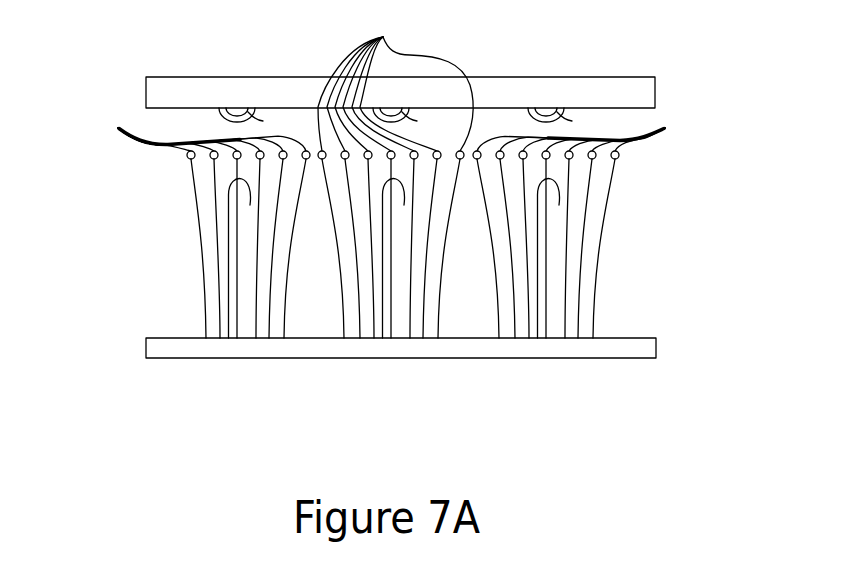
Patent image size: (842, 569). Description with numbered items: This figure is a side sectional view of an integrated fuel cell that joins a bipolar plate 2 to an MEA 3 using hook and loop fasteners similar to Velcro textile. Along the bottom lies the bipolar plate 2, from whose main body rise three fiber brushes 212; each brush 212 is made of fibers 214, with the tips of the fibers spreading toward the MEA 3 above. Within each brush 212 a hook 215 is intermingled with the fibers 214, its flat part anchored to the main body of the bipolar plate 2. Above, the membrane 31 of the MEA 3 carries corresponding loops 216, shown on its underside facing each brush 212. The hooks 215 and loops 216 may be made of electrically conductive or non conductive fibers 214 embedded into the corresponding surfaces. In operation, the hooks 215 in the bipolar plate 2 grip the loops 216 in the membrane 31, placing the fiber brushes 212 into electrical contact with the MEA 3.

The bipolar plate 2 is at (657, 348).
The MEA 3 is at (428, 77).
The membrane 31 is at (498, 77).
The brush 212 is at (374, 276).
The fiber 214 is at (198, 193).
The hook 215 is at (233, 248).
The loop 216 is at (418, 123).